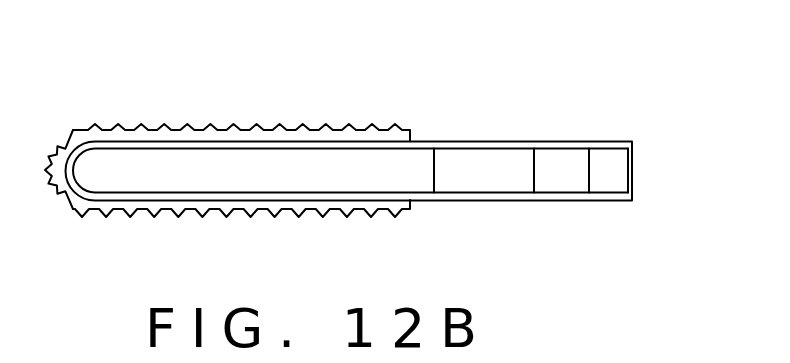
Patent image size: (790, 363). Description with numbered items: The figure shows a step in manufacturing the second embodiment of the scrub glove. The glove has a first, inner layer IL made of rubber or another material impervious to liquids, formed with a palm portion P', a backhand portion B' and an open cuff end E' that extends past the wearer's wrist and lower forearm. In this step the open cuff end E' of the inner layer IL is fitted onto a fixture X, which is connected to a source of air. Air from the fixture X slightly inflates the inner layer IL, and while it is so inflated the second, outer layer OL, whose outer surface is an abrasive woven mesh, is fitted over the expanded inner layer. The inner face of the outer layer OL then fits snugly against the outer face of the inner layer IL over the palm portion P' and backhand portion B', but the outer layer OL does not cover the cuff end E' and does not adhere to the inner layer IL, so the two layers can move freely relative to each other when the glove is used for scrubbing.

The outer layer OL is at (110, 130).
The backhand portion B' is at (349, 124).
The palm portion P' is at (350, 208).
The cuff end E' is at (485, 135).
The inner layer IL is at (610, 168).
The fixture X is at (474, 184).